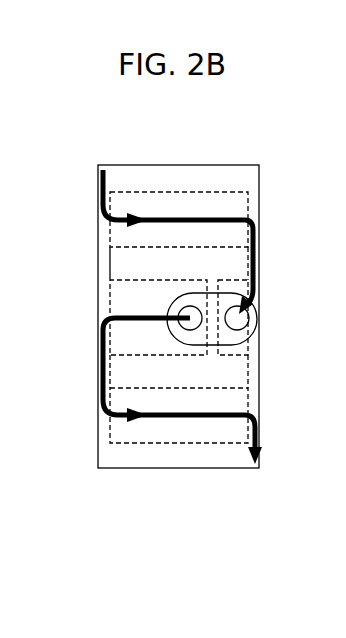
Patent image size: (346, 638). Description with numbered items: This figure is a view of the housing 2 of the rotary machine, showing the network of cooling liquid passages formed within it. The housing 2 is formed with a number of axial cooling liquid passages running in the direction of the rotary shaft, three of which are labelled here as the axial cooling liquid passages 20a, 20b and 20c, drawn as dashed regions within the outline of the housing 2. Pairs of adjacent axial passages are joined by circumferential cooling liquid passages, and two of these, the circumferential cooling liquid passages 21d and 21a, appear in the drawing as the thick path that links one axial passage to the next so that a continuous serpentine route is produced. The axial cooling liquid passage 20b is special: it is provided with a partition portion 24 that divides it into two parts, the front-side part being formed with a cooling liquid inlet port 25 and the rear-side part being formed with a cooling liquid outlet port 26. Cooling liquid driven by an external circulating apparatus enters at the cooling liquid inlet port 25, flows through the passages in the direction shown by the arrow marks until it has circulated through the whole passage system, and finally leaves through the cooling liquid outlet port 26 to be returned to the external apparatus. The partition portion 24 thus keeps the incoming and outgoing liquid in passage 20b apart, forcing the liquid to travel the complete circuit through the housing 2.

The housing 2 is at (188, 165).
The axial cooling liquid passage 20a is at (160, 207).
The axial cooling liquid passage 20b is at (125, 290).
The axial cooling liquid passage 20c is at (120, 432).
The circumferential cooling liquid passage 21a is at (100, 330).
The circumferential cooling liquid passage 21d is at (102, 222).
The partition portion 24 is at (237, 330).
The cooling liquid inlet port 25 is at (190, 330).
The cooling liquid outlet port 26 is at (243, 322).